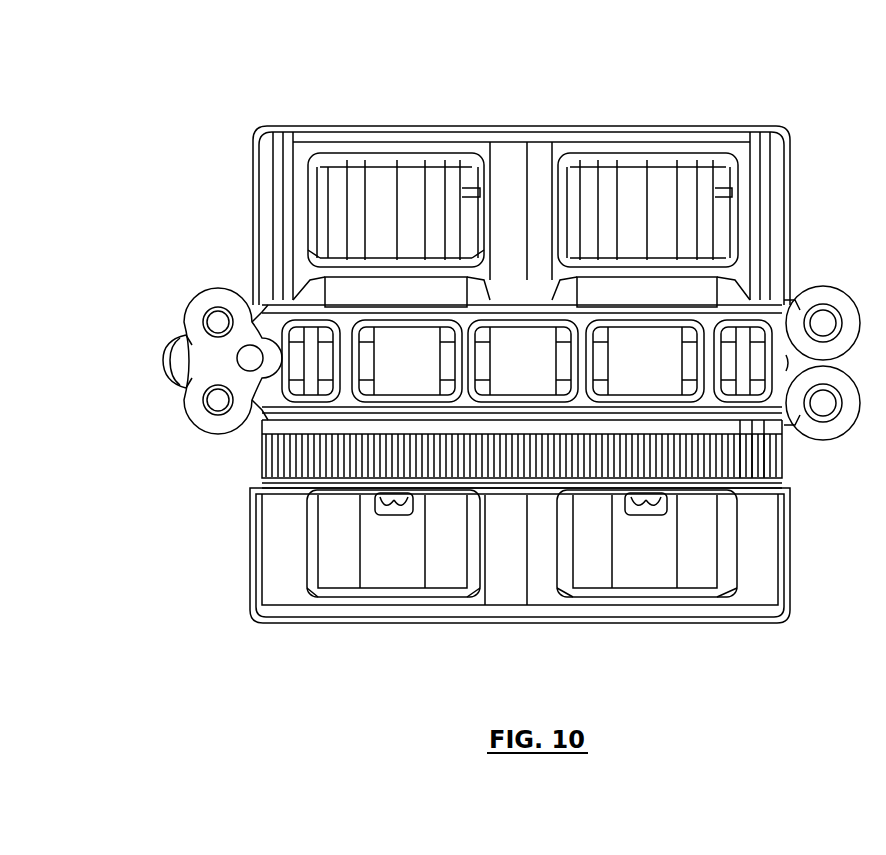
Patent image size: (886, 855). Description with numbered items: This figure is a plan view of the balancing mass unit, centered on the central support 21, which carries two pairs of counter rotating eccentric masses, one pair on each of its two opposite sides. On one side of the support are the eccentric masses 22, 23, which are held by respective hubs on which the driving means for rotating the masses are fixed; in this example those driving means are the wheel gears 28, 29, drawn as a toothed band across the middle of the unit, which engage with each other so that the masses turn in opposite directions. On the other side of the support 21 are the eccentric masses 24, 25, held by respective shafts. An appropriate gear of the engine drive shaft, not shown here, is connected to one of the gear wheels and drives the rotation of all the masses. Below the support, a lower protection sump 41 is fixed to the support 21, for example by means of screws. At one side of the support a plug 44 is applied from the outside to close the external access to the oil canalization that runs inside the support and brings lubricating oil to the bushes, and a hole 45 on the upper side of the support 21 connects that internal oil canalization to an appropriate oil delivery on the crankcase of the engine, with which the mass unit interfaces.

The central support 21 is at (783, 307).
The eccentric mass 22 is at (378, 563).
The eccentric mass 23 is at (675, 558).
The eccentric mass 24 is at (392, 190).
The eccentric mass 25 is at (633, 208).
The wheel gear 28 is at (297, 450).
The wheel gear 29 is at (770, 458).
The lower protection sump 41 is at (767, 565).
The plug 44 is at (160, 353).
The hole 45 is at (246, 352).